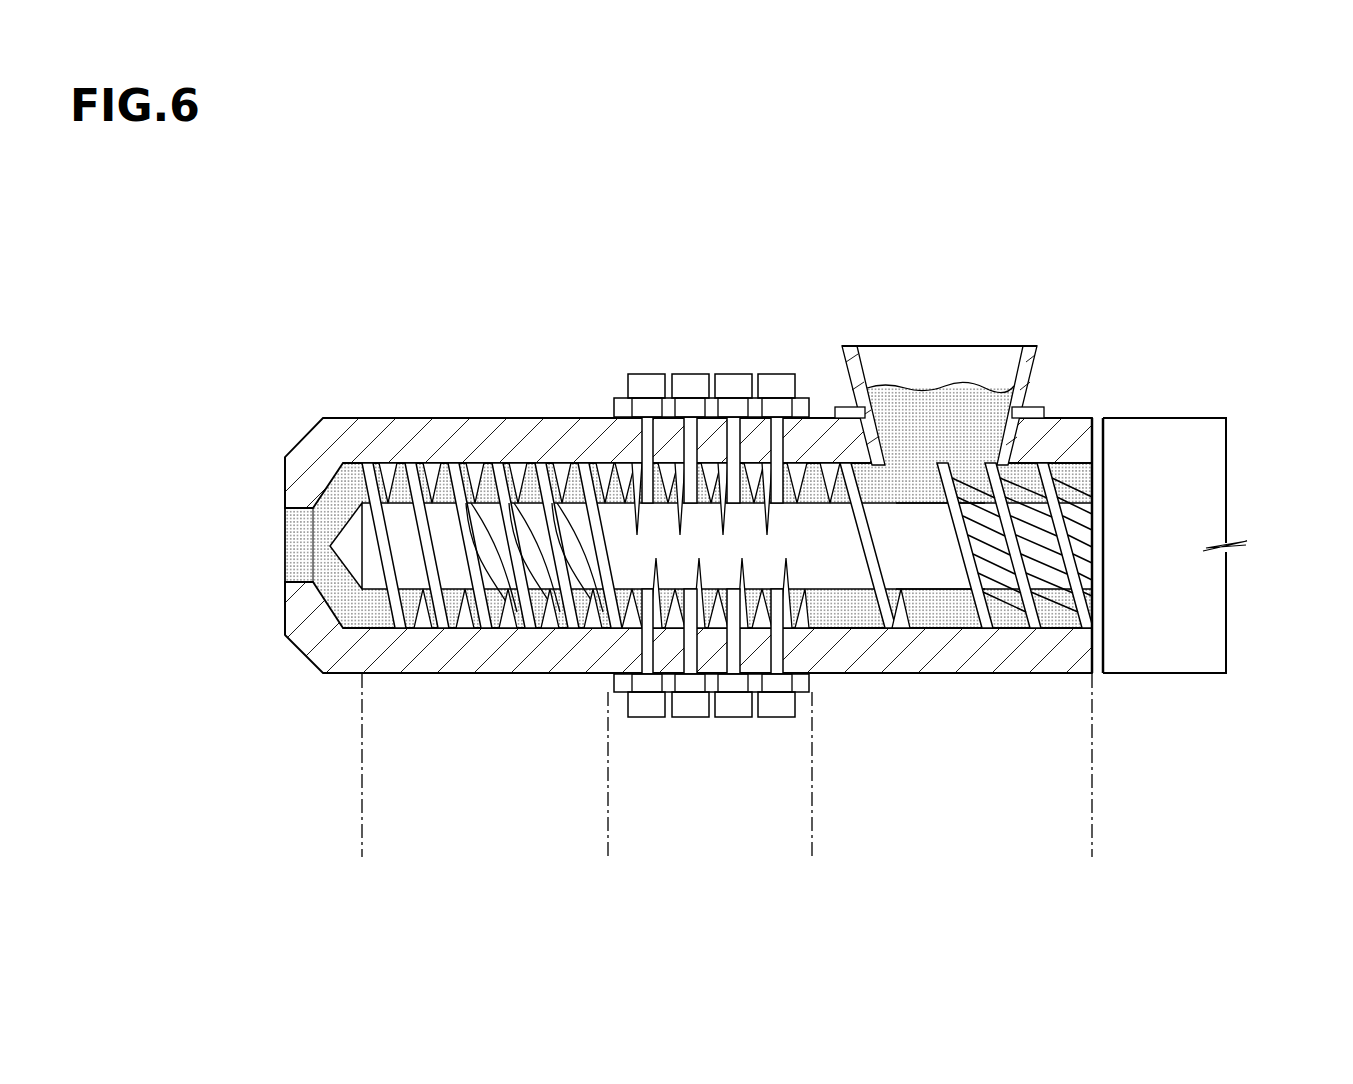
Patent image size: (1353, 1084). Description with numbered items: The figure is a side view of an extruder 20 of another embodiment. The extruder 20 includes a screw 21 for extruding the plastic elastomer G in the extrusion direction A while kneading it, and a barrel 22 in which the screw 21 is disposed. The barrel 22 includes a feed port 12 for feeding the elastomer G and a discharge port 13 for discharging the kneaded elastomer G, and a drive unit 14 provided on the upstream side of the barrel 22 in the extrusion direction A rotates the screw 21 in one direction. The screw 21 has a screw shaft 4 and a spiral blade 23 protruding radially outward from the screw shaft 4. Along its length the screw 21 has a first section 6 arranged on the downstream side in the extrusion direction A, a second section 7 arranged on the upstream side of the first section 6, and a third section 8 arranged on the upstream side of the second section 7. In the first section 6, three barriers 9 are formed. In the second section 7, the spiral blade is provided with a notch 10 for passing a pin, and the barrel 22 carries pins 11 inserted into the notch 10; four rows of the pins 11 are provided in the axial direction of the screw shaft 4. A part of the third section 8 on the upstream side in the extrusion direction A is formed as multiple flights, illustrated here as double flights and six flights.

The extruder 20 is at (1221, 310).
The barrel 22 is at (473, 437).
The barriers 9 is at (711, 556).
The notch 10 is at (789, 524).
The pins 11 is at (647, 637).
The feed port 12 is at (893, 325).
The elastomer G is at (952, 422).
The drive unit 14 is at (1185, 475).
The discharge port 13 is at (260, 546).
The spiral blade 23 is at (873, 568).
The screw shaft 4 is at (927, 565).
The screw 21 is at (957, 755).
The first section 6 is at (362, 857).
The second section 7 is at (608, 857).
The third section 8 is at (812, 857).
The extrusion direction A is at (740, 264).